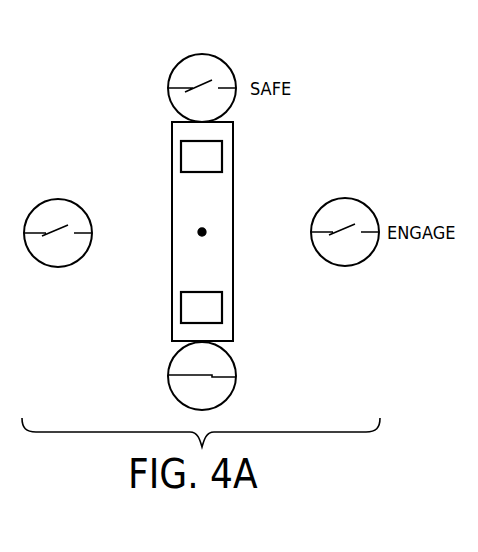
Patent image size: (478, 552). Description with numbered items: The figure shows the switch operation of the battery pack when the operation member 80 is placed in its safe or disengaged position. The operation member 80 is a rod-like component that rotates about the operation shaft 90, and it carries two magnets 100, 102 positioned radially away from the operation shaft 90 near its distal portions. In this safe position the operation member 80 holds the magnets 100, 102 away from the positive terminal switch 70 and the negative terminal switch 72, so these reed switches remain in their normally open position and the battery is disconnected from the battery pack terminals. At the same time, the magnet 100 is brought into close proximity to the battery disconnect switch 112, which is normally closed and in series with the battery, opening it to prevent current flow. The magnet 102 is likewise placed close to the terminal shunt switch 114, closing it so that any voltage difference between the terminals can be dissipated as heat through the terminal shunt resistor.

The positive terminal switch 70 is at (347, 198).
The negative terminal switch 72 is at (60, 199).
The operation member 80 is at (172, 273).
The operation shaft 90 is at (202, 232).
The magnet 100 is at (222, 152).
The magnet 102 is at (222, 306).
The battery disconnect switch 112 is at (202, 54).
The terminal shunt switch 114 is at (168, 392).